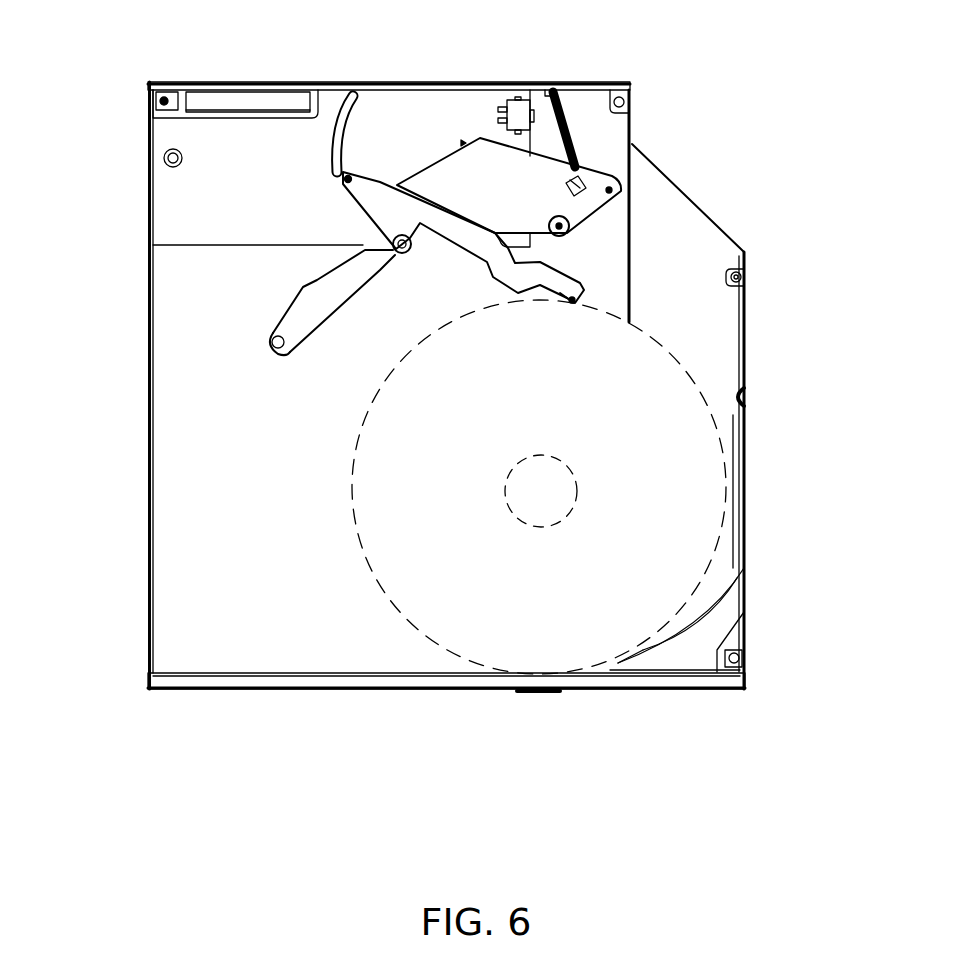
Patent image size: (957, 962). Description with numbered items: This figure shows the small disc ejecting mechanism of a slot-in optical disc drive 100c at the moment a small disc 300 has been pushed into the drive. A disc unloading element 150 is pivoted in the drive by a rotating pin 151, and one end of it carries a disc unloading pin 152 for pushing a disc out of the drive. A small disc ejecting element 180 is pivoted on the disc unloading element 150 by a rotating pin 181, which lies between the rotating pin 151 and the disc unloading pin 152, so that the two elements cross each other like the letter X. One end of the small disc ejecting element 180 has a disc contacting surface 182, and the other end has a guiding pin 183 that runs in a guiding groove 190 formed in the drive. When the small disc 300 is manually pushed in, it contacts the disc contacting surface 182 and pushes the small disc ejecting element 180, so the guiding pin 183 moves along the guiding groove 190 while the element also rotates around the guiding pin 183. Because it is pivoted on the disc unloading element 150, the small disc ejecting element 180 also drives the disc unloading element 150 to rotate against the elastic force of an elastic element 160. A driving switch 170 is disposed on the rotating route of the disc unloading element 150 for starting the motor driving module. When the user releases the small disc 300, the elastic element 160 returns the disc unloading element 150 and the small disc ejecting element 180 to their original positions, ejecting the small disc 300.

The chassis 100c is at (446, 386).
The disc unloading element 150 is at (343, 297).
The rotating pin 151 is at (568, 235).
The disc unloading pin 152 is at (273, 338).
The elastic element 160 is at (557, 93).
The driving switch 170 is at (513, 103).
The small disc ejecting element 180 is at (393, 187).
The rotating pin 181 is at (400, 243).
The disc contacting surface 182 is at (573, 305).
The guiding pin 183 is at (345, 178).
The guiding groove 190 is at (327, 143).
The small disc 300 is at (397, 610).